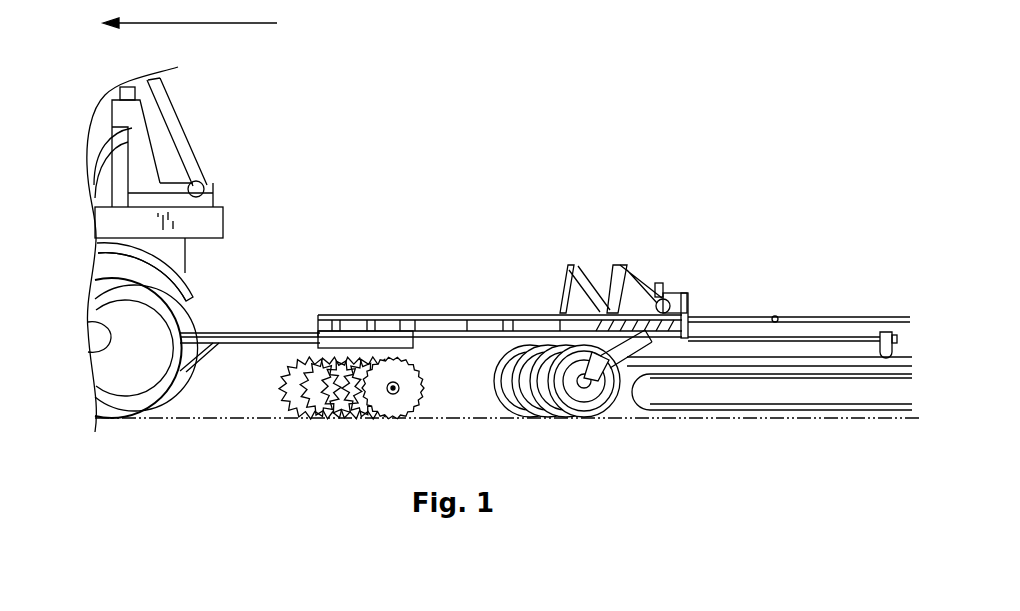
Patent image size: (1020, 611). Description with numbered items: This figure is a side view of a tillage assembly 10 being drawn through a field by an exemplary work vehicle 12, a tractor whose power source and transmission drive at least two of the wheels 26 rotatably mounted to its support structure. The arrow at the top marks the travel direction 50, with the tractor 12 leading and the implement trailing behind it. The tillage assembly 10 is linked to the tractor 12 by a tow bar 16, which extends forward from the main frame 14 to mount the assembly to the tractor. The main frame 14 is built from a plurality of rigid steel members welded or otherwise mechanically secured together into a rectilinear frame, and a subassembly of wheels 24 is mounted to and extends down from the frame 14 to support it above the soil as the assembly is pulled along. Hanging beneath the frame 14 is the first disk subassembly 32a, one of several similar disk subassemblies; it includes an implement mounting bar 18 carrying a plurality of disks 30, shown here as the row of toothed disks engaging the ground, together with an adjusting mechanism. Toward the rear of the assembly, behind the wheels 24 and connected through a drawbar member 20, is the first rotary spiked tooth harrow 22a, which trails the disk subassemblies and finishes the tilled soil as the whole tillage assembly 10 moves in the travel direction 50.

The tillage assembly 10 is at (393, 140).
The work vehicle 12 is at (219, 222).
The main frame 14 is at (459, 316).
The tow bar 16 is at (252, 333).
The implement mounting bar 18 is at (360, 335).
The drawbar 20 is at (735, 338).
The first rotary spiked tooth harrow 22a is at (820, 390).
The wheels 24 is at (577, 392).
The wheels 26 is at (133, 362).
The disks 30 is at (406, 397).
The first disk subassembly 32a is at (368, 433).
The travel direction 50 is at (190, 14).